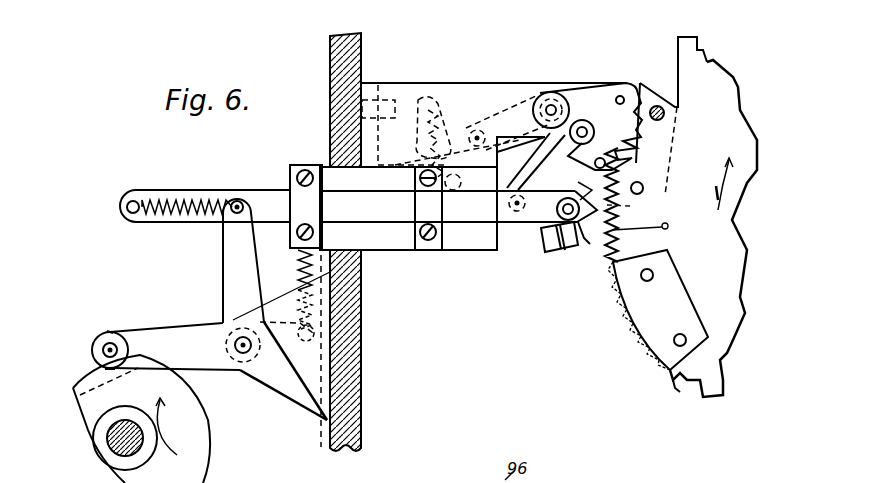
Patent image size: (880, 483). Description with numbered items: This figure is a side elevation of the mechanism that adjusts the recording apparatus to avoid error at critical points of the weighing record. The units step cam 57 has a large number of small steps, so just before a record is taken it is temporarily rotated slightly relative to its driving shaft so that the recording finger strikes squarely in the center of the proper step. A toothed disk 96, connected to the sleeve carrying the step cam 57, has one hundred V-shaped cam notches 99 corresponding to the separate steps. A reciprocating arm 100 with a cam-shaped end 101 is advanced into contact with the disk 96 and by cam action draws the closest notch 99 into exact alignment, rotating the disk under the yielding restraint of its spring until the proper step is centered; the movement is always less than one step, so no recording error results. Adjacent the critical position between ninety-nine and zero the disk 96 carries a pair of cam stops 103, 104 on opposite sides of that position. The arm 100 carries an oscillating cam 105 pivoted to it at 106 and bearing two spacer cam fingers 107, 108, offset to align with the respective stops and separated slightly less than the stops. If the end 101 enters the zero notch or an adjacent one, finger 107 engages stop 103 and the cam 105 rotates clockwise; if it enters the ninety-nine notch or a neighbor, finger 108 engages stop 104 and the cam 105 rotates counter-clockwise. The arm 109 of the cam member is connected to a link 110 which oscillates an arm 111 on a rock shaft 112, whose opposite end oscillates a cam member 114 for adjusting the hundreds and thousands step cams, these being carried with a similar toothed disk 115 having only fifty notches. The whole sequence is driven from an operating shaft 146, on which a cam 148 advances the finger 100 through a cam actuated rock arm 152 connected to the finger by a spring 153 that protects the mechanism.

The units step cam 57 is at (475, 474).
The toothed disk 96 is at (732, 313).
The cam notches 99 is at (677, 388).
The reciprocating arm 100 is at (515, 224).
The cam-shaped end 101 is at (612, 258).
The cam stop 103 is at (685, 297).
The cam stop 104 is at (668, 82).
The oscillating cam 105 is at (547, 250).
The pivot 106 is at (563, 253).
The spacer cam finger 107 is at (583, 244).
The spacer cam finger 108 is at (610, 183).
The arm of cam member 109 is at (521, 157).
The link 110 is at (541, 156).
The arm 111 is at (587, 127).
The rock shaft 112 is at (553, 105).
The cam member 114 is at (606, 89).
The toothed disk 115 is at (698, 49).
The operating shaft 146 is at (110, 452).
The cam 148 is at (93, 403).
The cam actuated rock arm 152 is at (214, 322).
The spring 153 is at (187, 215).